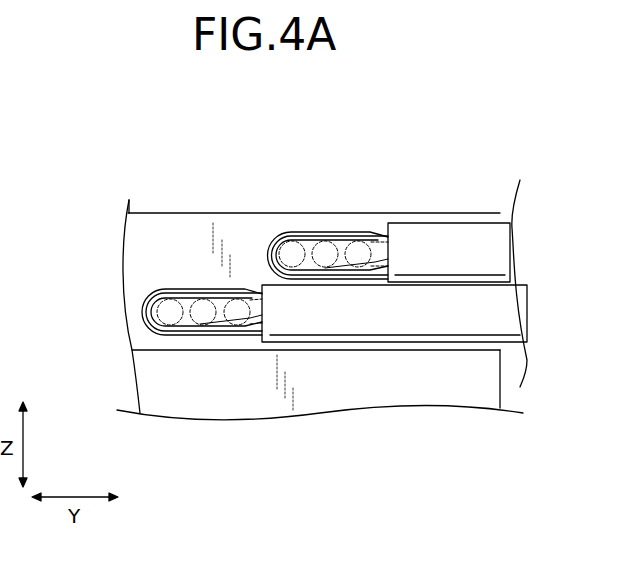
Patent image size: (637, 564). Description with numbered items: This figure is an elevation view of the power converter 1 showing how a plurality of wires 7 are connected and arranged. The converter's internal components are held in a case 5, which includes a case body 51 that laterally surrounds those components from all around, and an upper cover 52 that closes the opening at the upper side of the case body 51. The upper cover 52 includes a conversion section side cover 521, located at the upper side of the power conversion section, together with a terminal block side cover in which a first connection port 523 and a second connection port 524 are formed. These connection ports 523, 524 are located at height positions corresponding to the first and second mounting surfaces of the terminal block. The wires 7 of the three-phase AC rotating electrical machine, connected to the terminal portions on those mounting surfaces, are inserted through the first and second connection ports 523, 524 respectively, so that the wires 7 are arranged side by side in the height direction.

The electrical connection structure 1 is at (516, 166).
The case 5 is at (200, 213).
The case body 51 is at (337, 395).
The upper cover 52 is at (317, 212).
The conversion section side cover 521 is at (168, 232).
The first connection port 523 is at (150, 293).
The second connection port 524 is at (308, 231).
The wires 7 is at (345, 250).